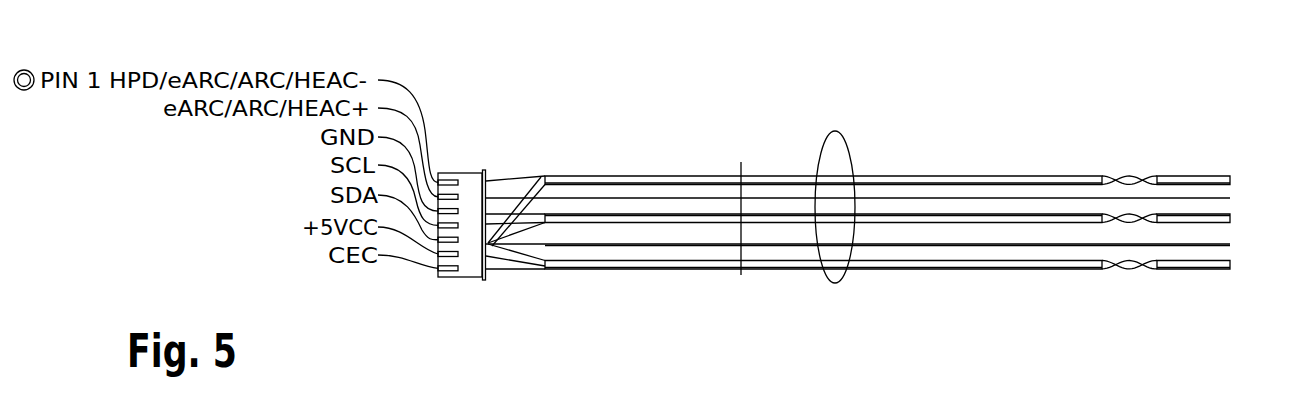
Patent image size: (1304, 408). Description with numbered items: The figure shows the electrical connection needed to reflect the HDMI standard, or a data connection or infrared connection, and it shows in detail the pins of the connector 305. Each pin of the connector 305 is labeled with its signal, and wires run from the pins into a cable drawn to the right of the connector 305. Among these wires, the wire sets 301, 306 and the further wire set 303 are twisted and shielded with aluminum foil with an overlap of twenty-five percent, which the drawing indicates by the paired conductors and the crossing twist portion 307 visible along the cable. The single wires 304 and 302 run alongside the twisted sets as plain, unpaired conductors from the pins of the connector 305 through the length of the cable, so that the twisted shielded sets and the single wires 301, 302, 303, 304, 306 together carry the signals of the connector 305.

The twisted and shielded wire pair 301 is at (891, 175).
The single wire 302 is at (947, 193).
The second twisted pair (SCL/SDA) 303 is at (1058, 215).
The single wire 304 is at (1188, 245).
The connector 305 is at (460, 173).
The twisted and shielded wire pair 306 is at (988, 270).
The twist 307 is at (1137, 270).